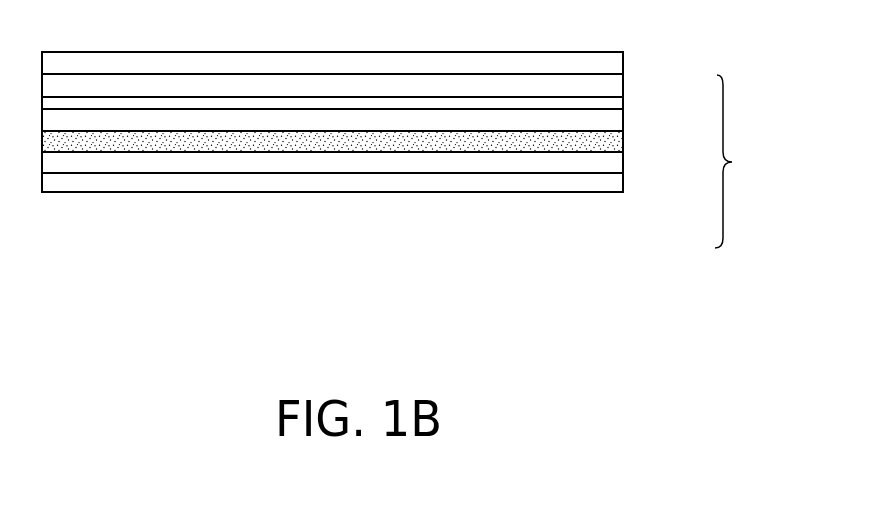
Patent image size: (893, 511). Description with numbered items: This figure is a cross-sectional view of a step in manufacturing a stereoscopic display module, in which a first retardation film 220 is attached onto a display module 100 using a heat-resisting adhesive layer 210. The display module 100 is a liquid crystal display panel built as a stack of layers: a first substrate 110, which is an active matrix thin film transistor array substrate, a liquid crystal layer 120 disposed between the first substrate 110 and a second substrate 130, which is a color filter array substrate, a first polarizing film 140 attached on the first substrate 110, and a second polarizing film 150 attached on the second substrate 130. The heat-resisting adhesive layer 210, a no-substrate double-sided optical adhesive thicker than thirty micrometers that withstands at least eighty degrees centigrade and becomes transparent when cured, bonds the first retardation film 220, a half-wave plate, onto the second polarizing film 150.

The display module 100 is at (745, 161).
The first substrate 110 is at (615, 163).
The liquid crystal layer 120 is at (622, 142).
The second substrate 130 is at (615, 120).
The first polarizing film 140 is at (613, 182).
The second polarizing film 150 is at (622, 103).
The heat-resisting adhesive layer 210 is at (613, 86).
The first retardation film 220 is at (608, 58).